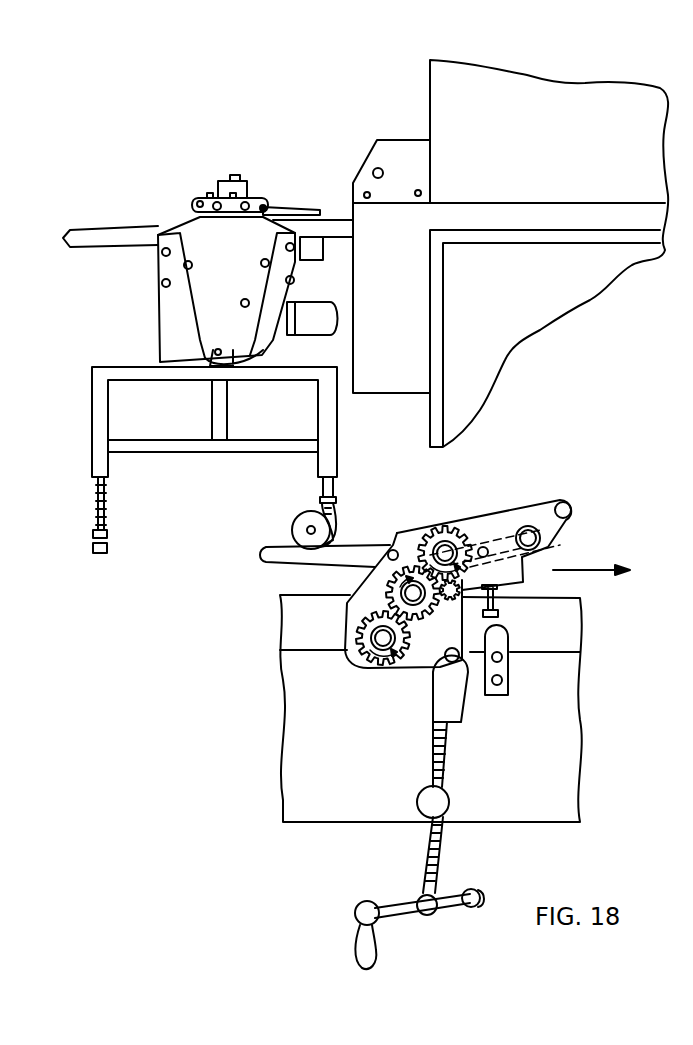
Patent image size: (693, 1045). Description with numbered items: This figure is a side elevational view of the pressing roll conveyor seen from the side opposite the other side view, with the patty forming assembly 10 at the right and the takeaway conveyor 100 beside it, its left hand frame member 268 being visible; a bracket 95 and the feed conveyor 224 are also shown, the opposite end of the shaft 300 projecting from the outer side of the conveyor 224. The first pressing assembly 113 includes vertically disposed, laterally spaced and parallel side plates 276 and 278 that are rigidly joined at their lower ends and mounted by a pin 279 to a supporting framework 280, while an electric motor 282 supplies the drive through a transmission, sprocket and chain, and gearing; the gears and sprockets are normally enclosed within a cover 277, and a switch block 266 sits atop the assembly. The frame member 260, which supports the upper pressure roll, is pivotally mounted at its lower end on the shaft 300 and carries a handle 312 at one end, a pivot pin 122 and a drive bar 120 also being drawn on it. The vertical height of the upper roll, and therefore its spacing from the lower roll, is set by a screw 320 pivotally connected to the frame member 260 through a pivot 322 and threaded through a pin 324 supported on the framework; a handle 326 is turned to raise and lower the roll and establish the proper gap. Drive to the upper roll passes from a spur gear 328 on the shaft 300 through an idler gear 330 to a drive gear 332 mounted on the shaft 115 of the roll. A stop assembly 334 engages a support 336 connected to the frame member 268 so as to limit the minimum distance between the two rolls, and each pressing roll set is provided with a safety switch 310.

The patty forming assembly 10 is at (570, 78).
The mounting column 95 is at (353, 166).
The takeaway conveyor 100 is at (331, 218).
The first pressing assembly 113 is at (235, 173).
The shaft of the upper roll 115 is at (441, 551).
The drive bar 120 is at (481, 517).
The pivot pin 122 is at (538, 538).
The conveyor 224 is at (114, 226).
The frame member 260 is at (198, 198).
The switch block 266 is at (233, 180).
The left hand frame member 268 is at (292, 206).
The side plate 276 is at (175, 306).
The cover 277 is at (258, 266).
The side plate 278 is at (280, 601).
The pin 279 is at (240, 352).
The supporting framework 280 is at (100, 390).
The electric motor 282 is at (308, 315).
The shaft 300 is at (380, 642).
The safety switch 310 is at (292, 555).
The handle 312 is at (570, 510).
The screw 320 is at (432, 750).
The pivot 322 is at (443, 662).
The pin 324 is at (436, 802).
The handle 326 is at (395, 904).
The spur gear 328 is at (366, 632).
The idler gear 330 is at (390, 590).
The drive gear 332 is at (443, 528).
The stop assembly 334 is at (498, 614).
The support 336 is at (500, 652).